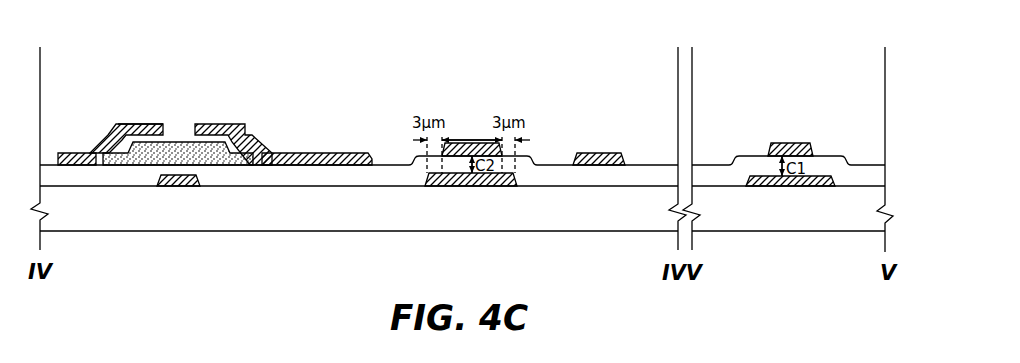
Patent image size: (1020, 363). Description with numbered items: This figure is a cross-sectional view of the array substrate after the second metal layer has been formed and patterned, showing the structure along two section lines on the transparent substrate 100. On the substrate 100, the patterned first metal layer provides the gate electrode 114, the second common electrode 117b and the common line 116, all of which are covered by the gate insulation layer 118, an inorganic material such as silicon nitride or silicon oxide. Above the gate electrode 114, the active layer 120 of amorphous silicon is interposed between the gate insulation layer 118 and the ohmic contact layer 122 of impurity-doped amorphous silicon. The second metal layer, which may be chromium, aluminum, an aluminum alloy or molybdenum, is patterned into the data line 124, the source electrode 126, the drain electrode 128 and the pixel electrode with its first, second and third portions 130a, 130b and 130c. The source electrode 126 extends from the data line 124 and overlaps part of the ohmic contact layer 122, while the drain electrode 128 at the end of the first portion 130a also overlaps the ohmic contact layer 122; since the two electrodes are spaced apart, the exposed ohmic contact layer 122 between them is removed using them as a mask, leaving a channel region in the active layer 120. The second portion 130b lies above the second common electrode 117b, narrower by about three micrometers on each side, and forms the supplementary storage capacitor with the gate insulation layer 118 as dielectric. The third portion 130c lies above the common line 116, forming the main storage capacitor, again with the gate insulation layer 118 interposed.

The transparent substrate 100 is at (392, 219).
The gate electrode 114 is at (178, 186).
The common line 116 is at (829, 176).
The second common electrode 117b is at (500, 186).
The gate insulation layer 118 is at (560, 165).
The active layer 120 is at (190, 142).
The ohmic contact layer 122 is at (130, 124).
The data line 124 is at (80, 153).
The source electrode 126 is at (157, 124).
The drain electrode 128 is at (233, 124).
The first portion of the pixel electrode 130a is at (356, 153).
The second portion of the pixel electrode 130b is at (464, 143).
The third portion of the pixel electrode 130c is at (789, 143).